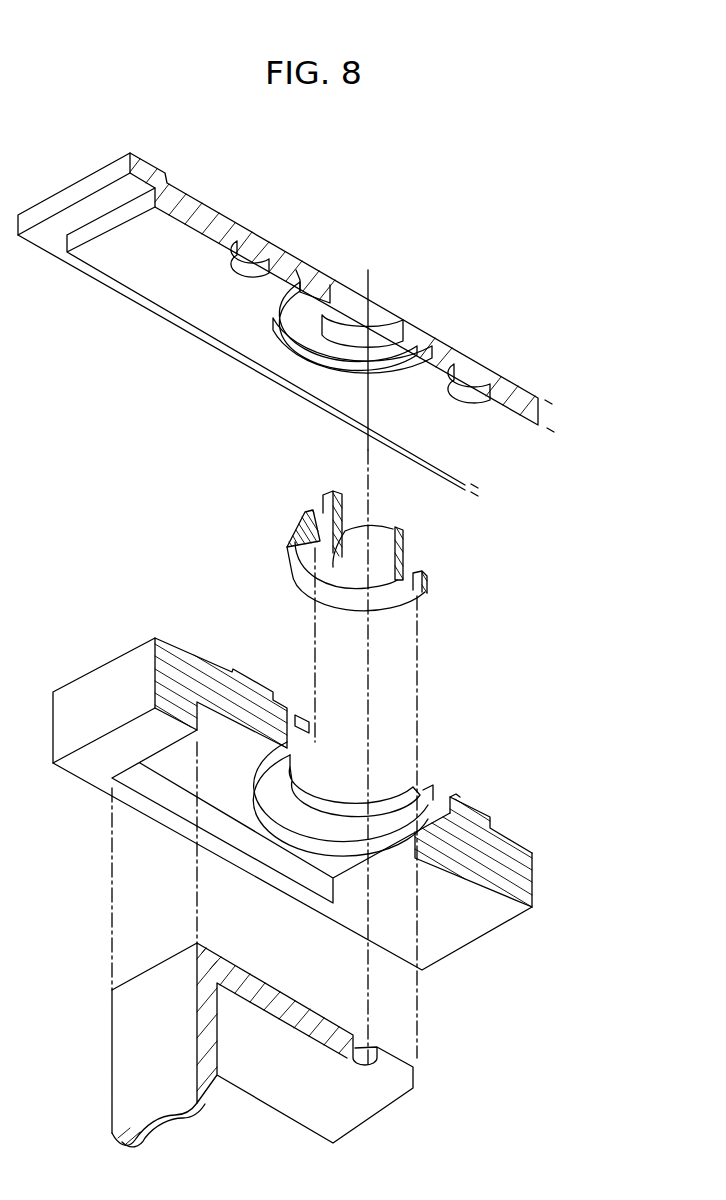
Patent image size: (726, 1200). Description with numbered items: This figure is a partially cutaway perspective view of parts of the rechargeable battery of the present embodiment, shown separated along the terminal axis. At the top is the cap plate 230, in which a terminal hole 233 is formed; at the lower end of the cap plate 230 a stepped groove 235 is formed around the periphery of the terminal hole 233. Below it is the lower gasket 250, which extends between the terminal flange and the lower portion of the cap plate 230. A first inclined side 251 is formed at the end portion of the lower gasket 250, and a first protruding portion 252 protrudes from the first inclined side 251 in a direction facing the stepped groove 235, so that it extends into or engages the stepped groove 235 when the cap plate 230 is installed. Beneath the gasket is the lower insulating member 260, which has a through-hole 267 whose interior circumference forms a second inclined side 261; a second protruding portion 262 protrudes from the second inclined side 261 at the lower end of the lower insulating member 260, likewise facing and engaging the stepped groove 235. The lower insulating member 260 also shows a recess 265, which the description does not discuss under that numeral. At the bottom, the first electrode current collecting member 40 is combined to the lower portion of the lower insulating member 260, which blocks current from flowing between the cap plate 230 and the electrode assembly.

The cap plate 230 is at (223, 225).
The terminal hole 233 is at (357, 312).
The stepped groove 235 is at (450, 356).
The lower gasket 250 is at (405, 550).
The first inclined side 251 is at (288, 548).
The first protruding portion 252 is at (305, 513).
The lower insulating member 260 is at (536, 873).
The second inclined side 261 is at (337, 738).
The second protruding portion 262 is at (310, 722).
The bushing receiving recess 265 is at (277, 798).
The through-hole 267 is at (344, 781).
The first electrode current collecting member 40 is at (112, 1058).